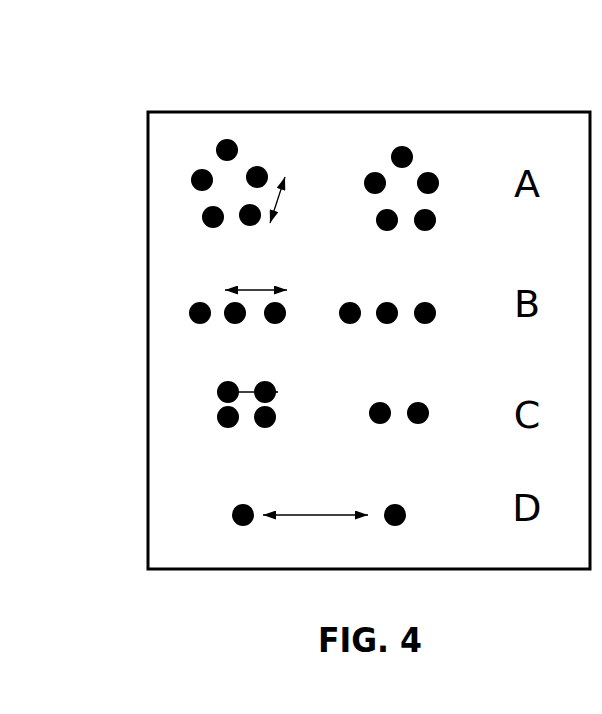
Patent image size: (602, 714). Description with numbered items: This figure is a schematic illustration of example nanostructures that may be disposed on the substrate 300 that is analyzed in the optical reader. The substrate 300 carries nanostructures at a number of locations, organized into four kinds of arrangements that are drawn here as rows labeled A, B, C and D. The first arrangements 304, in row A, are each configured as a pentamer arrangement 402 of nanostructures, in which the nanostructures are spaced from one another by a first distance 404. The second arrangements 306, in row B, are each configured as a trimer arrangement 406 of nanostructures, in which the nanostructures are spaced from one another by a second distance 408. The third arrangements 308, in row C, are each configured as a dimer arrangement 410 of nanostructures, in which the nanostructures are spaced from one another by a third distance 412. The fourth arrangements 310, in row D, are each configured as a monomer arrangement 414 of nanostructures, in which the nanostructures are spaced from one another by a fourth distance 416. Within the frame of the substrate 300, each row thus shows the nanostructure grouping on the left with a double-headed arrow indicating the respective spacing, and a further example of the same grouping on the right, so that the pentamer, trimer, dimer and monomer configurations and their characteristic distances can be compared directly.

The substrate 300 is at (468, 73).
The first arrangements 304 is at (185, 193).
The second arrangements 306 is at (180, 308).
The third arrangements 308 is at (177, 403).
The fourth arrangements 310 is at (200, 512).
The pentamer arrangement 402 is at (407, 155).
The first distance 404 is at (280, 183).
The trimer arrangement 406 is at (380, 302).
The second distance 408 is at (252, 285).
The dimer arrangement 410 is at (417, 412).
The third distance 412 is at (240, 385).
The monomer arrangement 414 is at (397, 510).
The fourth distance 416 is at (290, 510).